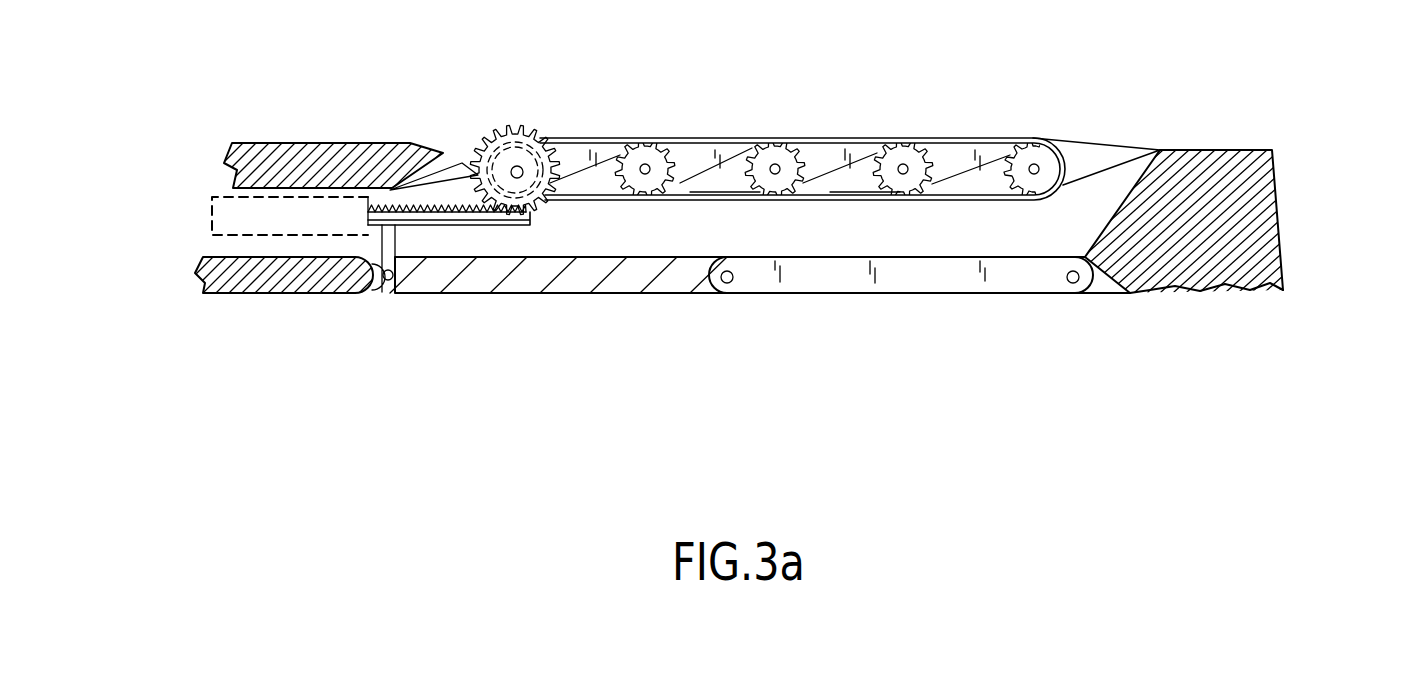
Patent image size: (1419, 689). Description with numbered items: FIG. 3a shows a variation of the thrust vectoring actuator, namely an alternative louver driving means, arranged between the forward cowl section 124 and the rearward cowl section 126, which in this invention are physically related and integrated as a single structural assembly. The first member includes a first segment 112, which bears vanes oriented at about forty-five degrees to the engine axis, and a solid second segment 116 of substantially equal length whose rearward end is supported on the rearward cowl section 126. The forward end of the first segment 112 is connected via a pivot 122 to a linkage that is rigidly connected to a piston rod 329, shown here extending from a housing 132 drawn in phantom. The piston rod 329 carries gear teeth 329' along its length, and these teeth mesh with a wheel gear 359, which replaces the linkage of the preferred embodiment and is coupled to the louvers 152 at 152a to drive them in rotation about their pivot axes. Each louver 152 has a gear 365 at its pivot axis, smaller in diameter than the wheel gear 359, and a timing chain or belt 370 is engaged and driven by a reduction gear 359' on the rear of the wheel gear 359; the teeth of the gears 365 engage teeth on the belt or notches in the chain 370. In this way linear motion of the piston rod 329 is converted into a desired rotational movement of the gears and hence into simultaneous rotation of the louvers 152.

The first segment 112 is at (437, 296).
The second segment 116 is at (945, 298).
The pivot 122 is at (386, 292).
The forward cowl section 124 is at (233, 163).
The rearward cowl section 126 is at (1273, 212).
The housing (phantom) 132 is at (208, 213).
The pivotable louvers 152 is at (697, 195).
The louver coupling point 152a is at (477, 173).
The piston rod 329 is at (449, 286).
The gear teeth 329' is at (428, 146).
The wheel gear 359 is at (514, 126).
The reduction gear 359' is at (530, 266).
The gear 365 is at (544, 138).
The timing chain or belt 370 is at (982, 138).